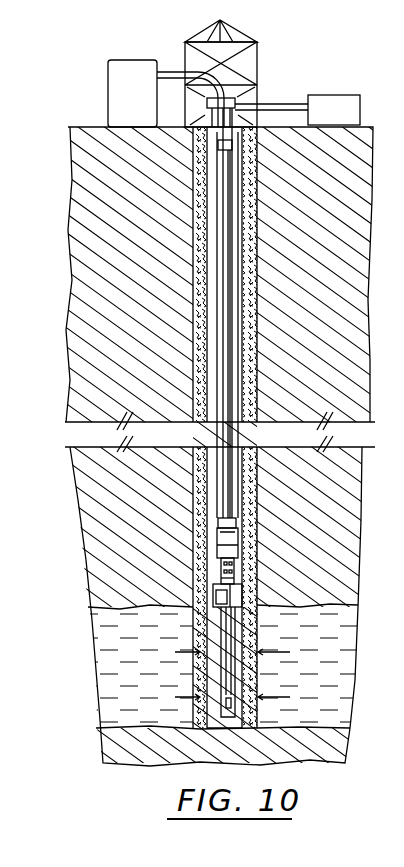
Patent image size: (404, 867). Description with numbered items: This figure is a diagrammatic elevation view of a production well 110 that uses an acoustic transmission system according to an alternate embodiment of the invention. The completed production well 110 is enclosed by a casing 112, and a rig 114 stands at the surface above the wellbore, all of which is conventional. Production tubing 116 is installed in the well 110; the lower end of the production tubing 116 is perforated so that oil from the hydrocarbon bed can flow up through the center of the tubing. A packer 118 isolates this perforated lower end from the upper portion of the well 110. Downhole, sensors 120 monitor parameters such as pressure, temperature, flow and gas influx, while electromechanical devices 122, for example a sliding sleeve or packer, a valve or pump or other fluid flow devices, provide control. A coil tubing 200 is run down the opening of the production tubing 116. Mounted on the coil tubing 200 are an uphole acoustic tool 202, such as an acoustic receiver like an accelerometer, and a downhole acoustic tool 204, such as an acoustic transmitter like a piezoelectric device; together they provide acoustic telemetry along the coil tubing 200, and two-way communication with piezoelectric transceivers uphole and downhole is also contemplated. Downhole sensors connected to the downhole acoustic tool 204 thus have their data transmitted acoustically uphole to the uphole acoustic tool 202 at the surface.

The rig 114 is at (244, 34).
The uphole acoustic tool 202 is at (267, 133).
The production tubing 116 is at (215, 170).
The casing 112 is at (243, 200).
The production well 110 is at (246, 238).
The coil tubing 200 is at (227, 267).
The sensors 120 is at (218, 557).
The electromechanical devices 122 is at (256, 545).
The packer 118 is at (246, 588).
The downhole acoustic tool 204 is at (213, 579).